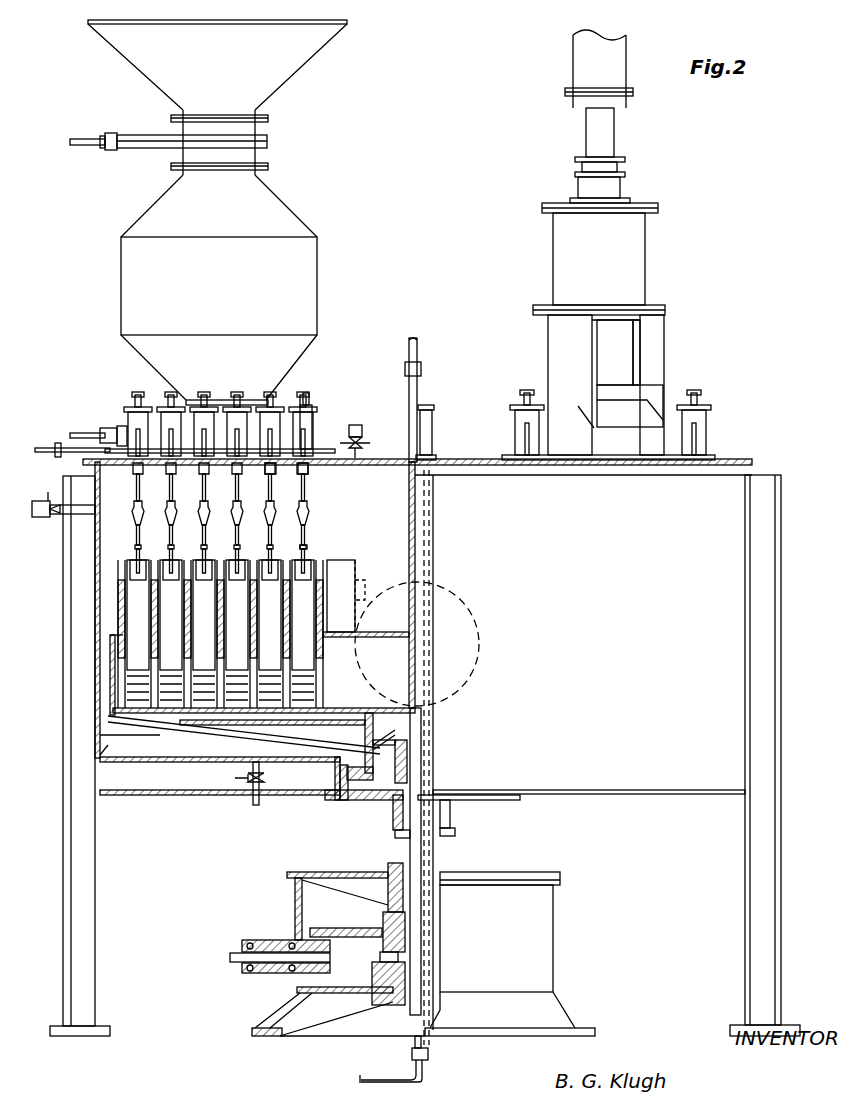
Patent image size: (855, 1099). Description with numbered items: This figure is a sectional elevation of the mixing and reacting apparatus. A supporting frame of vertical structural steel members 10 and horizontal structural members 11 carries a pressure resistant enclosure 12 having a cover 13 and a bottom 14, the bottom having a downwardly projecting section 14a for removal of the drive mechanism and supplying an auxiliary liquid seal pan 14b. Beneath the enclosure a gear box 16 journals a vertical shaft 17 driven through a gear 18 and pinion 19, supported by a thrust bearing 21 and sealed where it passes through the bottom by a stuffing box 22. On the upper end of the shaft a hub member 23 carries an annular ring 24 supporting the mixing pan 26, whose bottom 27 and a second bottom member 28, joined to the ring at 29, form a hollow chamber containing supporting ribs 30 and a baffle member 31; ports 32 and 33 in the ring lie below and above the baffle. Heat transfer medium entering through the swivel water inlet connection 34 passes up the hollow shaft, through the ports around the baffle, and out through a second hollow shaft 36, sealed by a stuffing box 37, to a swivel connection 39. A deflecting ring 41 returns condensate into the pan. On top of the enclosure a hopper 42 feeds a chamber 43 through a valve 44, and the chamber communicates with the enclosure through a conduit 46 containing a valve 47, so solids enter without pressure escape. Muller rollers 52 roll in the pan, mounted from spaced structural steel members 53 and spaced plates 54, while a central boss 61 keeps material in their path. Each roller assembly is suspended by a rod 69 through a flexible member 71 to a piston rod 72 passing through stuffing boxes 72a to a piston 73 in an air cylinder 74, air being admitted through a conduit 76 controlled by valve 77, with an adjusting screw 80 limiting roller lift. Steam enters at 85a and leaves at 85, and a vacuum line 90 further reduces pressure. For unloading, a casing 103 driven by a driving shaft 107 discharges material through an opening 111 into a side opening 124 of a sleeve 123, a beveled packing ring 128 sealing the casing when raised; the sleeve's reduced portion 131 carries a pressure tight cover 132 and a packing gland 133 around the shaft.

The vertical structural steel members 10 is at (63, 880).
The horizontal structural members 11 is at (640, 794).
The pressure resistant enclosure 12 is at (685, 636).
The cover 13 is at (745, 466).
The bottom 14 is at (175, 762).
The downwardly projecting section 14a is at (330, 800).
The auxiliary liquid seal pan 14b is at (355, 800).
The gear box 16 is at (553, 935).
The vertical shaft 17 is at (410, 845).
The gear 18 is at (310, 928).
The pinion 19 is at (300, 975).
The thrust bearing 21 is at (380, 957).
The stuffing box 22 is at (441, 810).
The hub member 23 is at (385, 755).
The annular ring 24 is at (395, 745).
The mixing pan 26 is at (113, 705).
The bottom 27 is at (100, 735).
The second bottom member 28 is at (95, 750).
The joint 29 is at (348, 780).
The supporting ribs 30 is at (170, 738).
The baffle member 31 is at (290, 725).
The ports 32 is at (347, 773).
The ports 33 is at (373, 690).
The swivel water inlet connection 34 is at (428, 1054).
The second hollow shaft 36 is at (415, 520).
The stuffing box 37 is at (432, 440).
The swivel connection 39 is at (417, 368).
The deflecting ring 41 is at (110, 640).
The hopper 42 is at (305, 58).
The chamber 43 is at (290, 220).
The valve 44 is at (267, 141).
The conduit 46 is at (250, 400).
The valve 47 is at (124, 412).
The muller rollers 52 is at (480, 610).
The spaced structural steel members 53 is at (360, 580).
The spaced plates 54 is at (122, 570).
The circular upwardly extending boss 61 is at (327, 680).
The rod 69 is at (307, 548).
The flexible member 71 is at (306, 520).
The piston rod 72 is at (306, 482).
The stuffing boxes 72a is at (360, 480).
The piston 73 is at (315, 415).
The air cylinder 74 is at (312, 404).
The conduit 76 is at (55, 447).
The valve 77 is at (70, 435).
The adjusting screw 80 is at (305, 405).
The steam outlet 85 is at (358, 425).
The steam entry 85a is at (253, 790).
The vacuum line 90 is at (40, 517).
The casing 103 is at (640, 370).
The driving shaft 107 is at (586, 130).
The discharge opening 111 is at (640, 340).
The sleeve 123 is at (548, 325).
The side opening 124 is at (650, 355).
The beveled packing ring 128 is at (640, 395).
The reduced portion 131 is at (553, 245).
The pressure tight cover 132 is at (553, 203).
The packing gland 133 is at (578, 185).